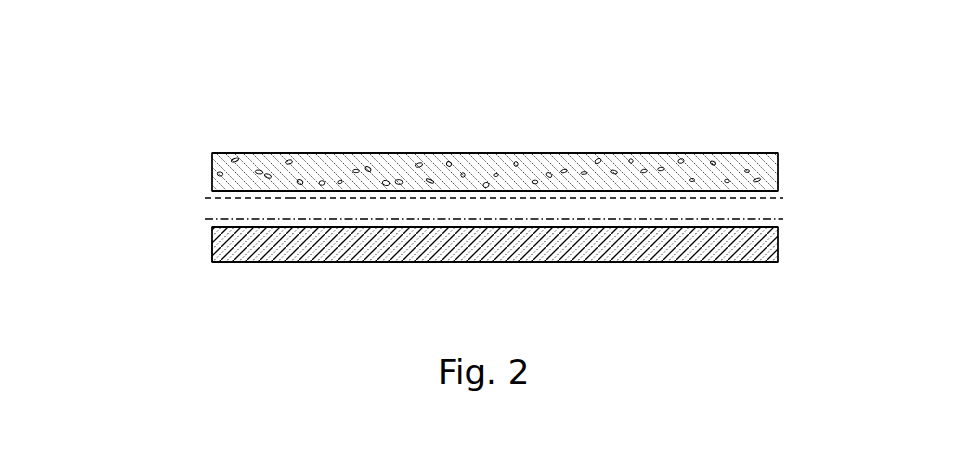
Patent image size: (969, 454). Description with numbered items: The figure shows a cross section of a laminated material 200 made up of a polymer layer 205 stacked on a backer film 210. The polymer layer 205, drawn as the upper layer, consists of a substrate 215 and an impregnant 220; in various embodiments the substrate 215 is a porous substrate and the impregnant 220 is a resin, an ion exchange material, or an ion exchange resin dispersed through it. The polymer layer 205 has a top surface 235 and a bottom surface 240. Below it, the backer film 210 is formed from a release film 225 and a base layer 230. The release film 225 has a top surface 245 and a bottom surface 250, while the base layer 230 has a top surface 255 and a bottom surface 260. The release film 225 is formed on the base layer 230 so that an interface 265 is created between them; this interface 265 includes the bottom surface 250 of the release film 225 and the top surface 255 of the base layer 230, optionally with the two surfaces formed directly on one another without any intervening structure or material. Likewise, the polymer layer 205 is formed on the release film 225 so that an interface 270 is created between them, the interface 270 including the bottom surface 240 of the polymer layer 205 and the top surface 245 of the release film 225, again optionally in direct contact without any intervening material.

The laminated material 200 is at (190, 105).
The polymer layer 205 is at (786, 153).
The backer film 210 is at (206, 197).
The substrate 215 is at (262, 168).
The impregnant 220 is at (541, 172).
The release film 225 is at (735, 212).
The base layer 230 is at (737, 248).
The top surface 235 is at (612, 153).
The bottom surface 240 is at (641, 200).
The top surface 245 is at (313, 200).
The bottom surface 250 is at (370, 229).
The top surface 255 is at (485, 231).
The bottom surface 260 is at (555, 263).
The interface 265 is at (222, 240).
The interface 270 is at (205, 195).